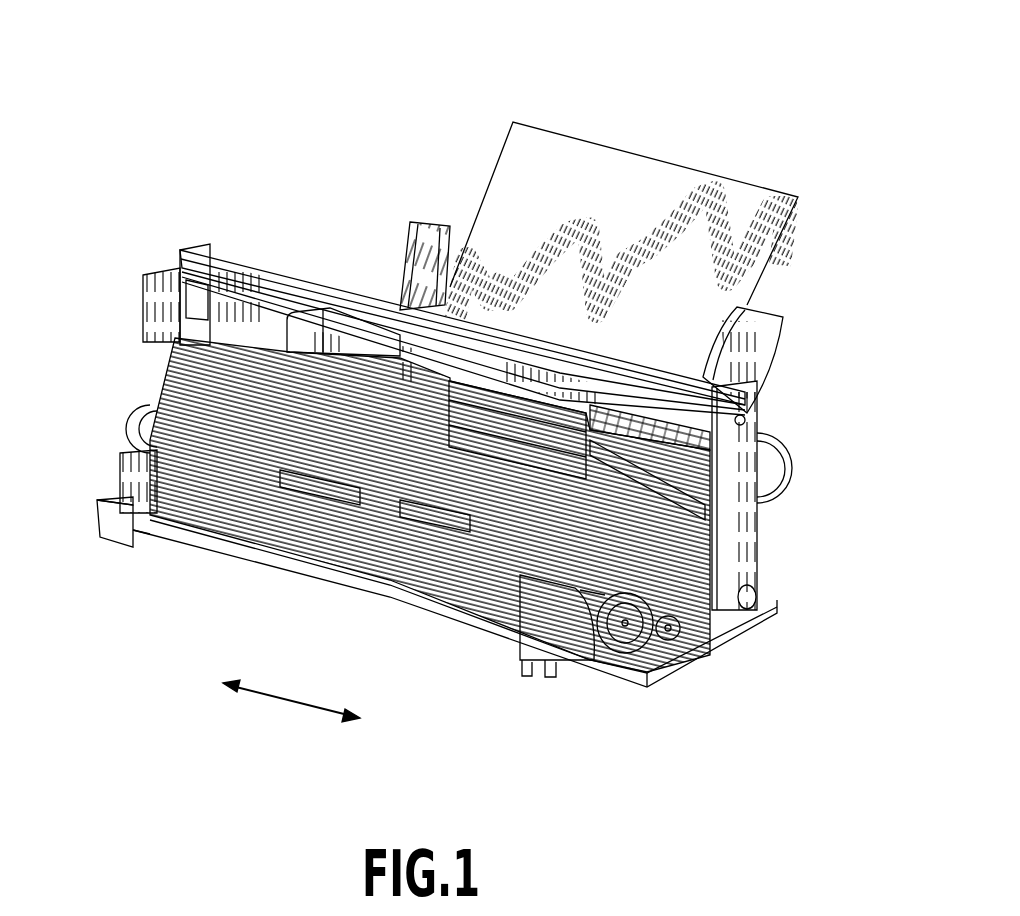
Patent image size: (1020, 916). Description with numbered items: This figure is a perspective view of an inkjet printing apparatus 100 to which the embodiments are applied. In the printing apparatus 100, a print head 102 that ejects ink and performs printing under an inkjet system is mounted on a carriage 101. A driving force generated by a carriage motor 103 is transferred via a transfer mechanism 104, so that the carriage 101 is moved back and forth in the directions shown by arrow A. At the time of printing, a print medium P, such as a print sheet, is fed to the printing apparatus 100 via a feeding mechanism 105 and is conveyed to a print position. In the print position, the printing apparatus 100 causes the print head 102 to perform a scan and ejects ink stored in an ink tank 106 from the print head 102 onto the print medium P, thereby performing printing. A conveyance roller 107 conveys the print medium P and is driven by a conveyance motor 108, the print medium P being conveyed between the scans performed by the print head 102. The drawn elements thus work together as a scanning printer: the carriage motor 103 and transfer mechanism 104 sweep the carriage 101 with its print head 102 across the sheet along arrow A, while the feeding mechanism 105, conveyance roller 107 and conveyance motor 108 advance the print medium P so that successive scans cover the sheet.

The inkjet printing apparatus 100 is at (461, 213).
The print medium P is at (585, 170).
The carriage 101 is at (507, 517).
The print head 102 is at (453, 517).
The carriage motor 103 is at (763, 443).
The transfer mechanism 104 is at (680, 500).
The feeding mechanism 105 is at (763, 335).
The ink tank 106 is at (465, 457).
The conveyance roller 107 is at (343, 487).
The conveyance motor 108 is at (147, 412).
The arrow A (carriage movement directions) A is at (291, 695).